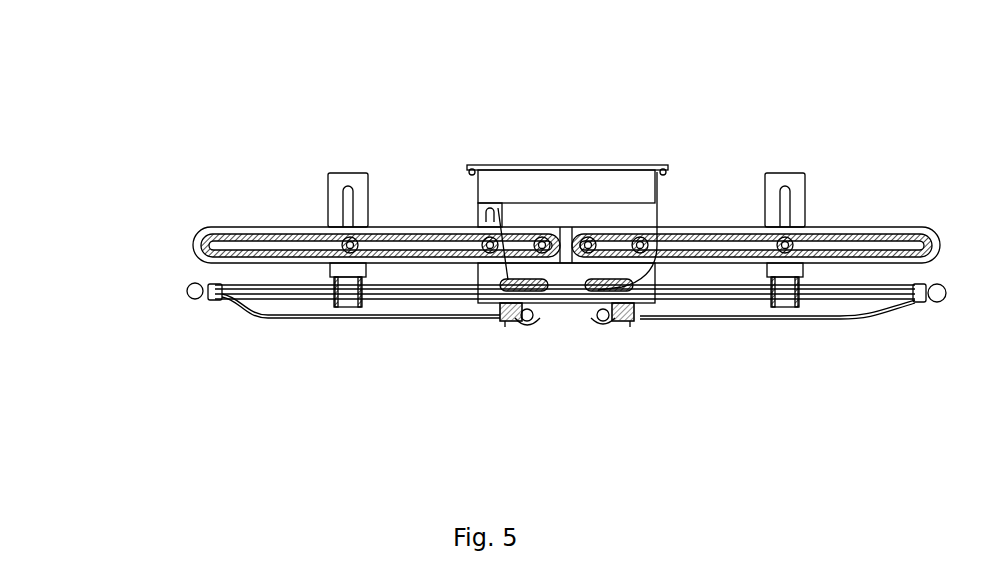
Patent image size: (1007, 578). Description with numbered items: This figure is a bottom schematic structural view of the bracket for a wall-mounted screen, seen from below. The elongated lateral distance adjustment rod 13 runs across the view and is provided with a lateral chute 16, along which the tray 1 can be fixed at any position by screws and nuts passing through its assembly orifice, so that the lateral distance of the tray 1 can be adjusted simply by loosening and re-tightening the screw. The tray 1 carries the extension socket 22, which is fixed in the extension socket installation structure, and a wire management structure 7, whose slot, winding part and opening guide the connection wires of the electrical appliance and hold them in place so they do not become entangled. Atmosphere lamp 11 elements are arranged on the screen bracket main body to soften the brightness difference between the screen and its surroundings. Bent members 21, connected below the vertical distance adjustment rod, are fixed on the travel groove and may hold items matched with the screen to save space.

The tray 1 is at (523, 220).
The wire management structure 7 is at (563, 288).
The atmosphere lamp 11 is at (190, 298).
The lateral distance adjustment rod 13 is at (285, 232).
The lateral chute 16 is at (263, 245).
The bent member 21 is at (358, 182).
The extension socket 22 is at (582, 187).